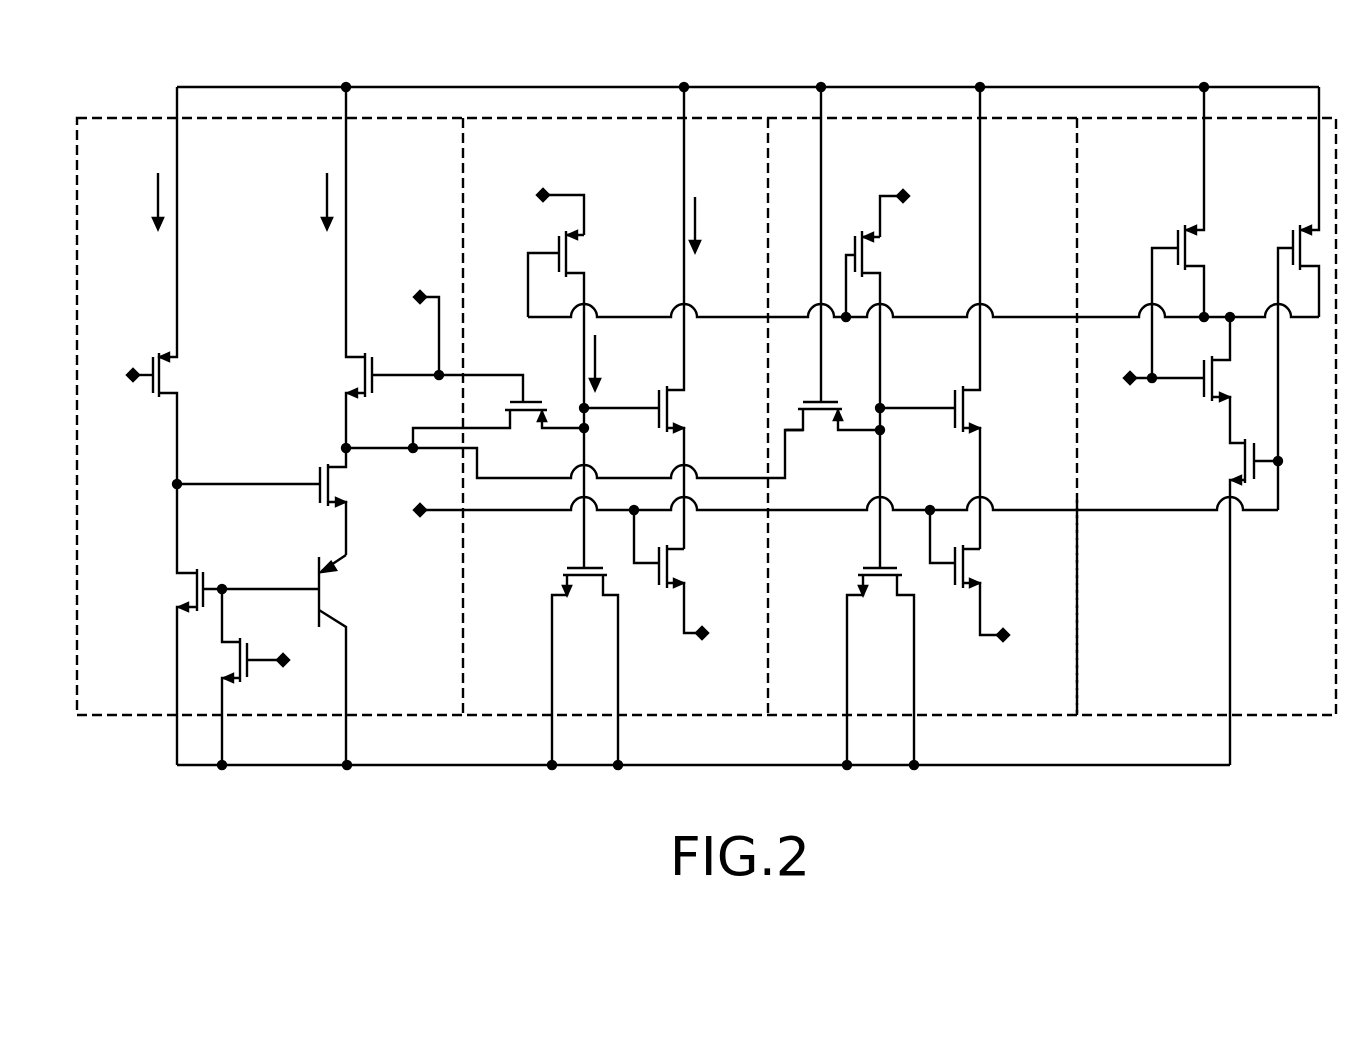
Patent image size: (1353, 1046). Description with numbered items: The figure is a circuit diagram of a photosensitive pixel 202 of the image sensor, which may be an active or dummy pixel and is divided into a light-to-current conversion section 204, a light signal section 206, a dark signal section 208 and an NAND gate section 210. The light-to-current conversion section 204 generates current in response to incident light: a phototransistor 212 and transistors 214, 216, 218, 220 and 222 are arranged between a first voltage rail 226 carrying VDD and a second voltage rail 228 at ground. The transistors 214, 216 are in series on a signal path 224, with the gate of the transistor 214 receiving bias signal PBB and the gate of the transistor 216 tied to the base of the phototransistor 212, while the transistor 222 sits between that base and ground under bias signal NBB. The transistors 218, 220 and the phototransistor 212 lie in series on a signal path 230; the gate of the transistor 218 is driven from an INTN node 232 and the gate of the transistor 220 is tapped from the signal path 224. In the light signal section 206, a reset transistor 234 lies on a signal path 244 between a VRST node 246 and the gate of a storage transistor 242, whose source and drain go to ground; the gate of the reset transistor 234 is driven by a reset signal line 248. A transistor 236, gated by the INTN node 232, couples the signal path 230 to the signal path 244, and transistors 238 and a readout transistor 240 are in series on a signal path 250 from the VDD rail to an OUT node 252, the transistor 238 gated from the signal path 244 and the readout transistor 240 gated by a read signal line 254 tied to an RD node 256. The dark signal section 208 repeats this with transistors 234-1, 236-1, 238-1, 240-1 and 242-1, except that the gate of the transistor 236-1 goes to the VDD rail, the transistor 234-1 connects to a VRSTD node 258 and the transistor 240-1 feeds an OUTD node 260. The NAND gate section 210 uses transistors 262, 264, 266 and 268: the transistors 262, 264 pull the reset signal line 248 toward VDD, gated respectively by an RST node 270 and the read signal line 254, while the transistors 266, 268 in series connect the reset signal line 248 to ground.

The photosensitive pixel 202 is at (1176, 56).
The light-to-current conversion section 204 is at (92, 701).
The light signal section 206 is at (482, 701).
The dark signal section 208 is at (782, 701).
The NAND gate section 210 is at (1097, 704).
The phototransistor 212 is at (318, 566).
The transistor 214 is at (176, 393).
The transistor 216 is at (187, 582).
The transistor 218 is at (348, 371).
The transistor 220 is at (346, 460).
The transistor 222 is at (233, 640).
The signal path 224 is at (155, 187).
The first voltage rail 226 is at (557, 86).
The second voltage rail 228 is at (500, 767).
The signal path 230 is at (324, 187).
The INTN node 232 is at (421, 292).
The reset transistor 234 is at (578, 268).
The transistor 234-1 is at (882, 262).
The transistor 236 is at (510, 418).
The transistor 236-1 is at (806, 418).
The transistor 238 is at (673, 396).
The transistor 238-1 is at (970, 397).
The readout transistor 240 is at (673, 557).
The transistor 240-1 is at (968, 557).
The storage transistor 242 is at (598, 586).
The transistor 242-1 is at (876, 567).
The signal path 244 is at (598, 357).
The VRST node 246 is at (547, 188).
The reset signal line 248 is at (1028, 315).
The signal path 250 is at (698, 218).
The OUT node 252 is at (703, 648).
The read signal line 254 is at (512, 513).
The RD node 256 is at (420, 520).
The VRSTD node 258 is at (903, 189).
The OUTD node 260 is at (1002, 648).
The transistor 262 is at (1176, 233).
The transistor 264 is at (1291, 233).
The transistor 266 is at (1222, 356).
The transistor 268 is at (1236, 452).
The RST node 270 is at (1131, 392).